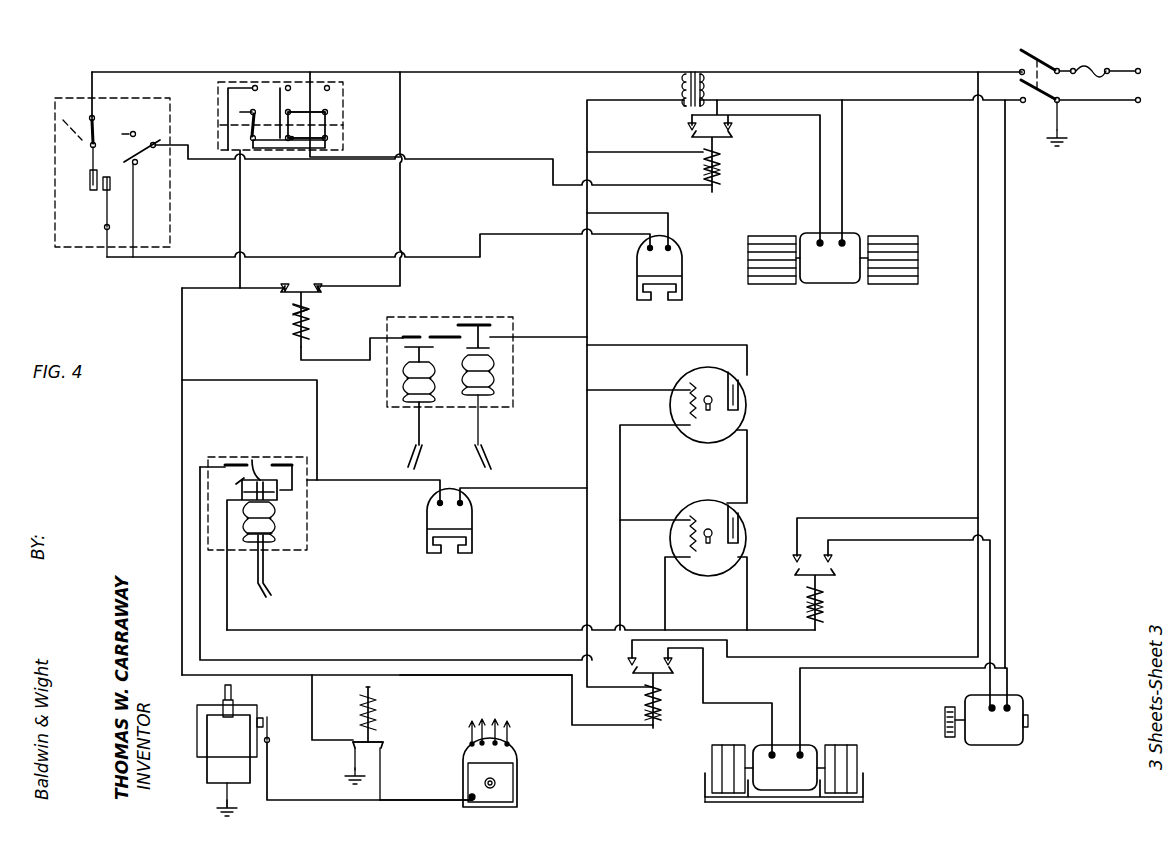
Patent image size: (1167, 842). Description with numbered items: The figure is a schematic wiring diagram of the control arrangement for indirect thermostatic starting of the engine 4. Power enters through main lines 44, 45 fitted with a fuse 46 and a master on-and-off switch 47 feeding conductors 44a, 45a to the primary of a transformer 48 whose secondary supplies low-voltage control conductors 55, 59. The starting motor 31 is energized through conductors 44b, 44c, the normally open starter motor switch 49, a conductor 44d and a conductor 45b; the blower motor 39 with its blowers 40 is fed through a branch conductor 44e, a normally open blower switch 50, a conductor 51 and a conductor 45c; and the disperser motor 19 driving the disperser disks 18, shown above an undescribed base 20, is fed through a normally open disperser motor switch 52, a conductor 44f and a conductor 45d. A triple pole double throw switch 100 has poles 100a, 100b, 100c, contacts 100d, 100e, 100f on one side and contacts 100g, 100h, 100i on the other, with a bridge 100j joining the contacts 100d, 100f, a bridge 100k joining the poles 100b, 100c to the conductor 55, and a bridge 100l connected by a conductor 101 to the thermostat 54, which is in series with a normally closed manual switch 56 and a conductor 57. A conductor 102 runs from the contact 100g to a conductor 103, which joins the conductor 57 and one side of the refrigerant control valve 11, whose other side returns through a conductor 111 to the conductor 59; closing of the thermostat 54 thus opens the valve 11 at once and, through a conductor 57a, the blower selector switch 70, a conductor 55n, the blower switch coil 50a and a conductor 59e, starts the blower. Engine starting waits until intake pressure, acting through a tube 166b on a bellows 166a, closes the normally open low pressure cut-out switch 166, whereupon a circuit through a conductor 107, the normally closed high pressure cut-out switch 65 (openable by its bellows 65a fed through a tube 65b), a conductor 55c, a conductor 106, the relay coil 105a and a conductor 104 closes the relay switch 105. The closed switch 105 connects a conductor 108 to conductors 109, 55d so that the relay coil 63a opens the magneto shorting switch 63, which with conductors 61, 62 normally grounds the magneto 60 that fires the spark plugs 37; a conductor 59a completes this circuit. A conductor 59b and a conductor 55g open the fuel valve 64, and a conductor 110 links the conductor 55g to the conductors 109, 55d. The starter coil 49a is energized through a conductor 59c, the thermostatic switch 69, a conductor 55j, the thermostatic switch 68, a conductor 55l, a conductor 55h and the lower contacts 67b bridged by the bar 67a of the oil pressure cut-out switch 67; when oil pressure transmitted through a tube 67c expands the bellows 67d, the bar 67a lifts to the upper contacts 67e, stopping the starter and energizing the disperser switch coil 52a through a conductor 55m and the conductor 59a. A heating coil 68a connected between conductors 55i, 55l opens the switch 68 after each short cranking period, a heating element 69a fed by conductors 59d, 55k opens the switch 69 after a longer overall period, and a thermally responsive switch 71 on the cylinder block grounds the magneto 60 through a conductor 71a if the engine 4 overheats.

The internal combustion engine 4 is at (192, 722).
The solenoid operated refrigerant control valve 11 is at (674, 260).
The disperser disks 18 is at (712, 770).
The disperser motor 19 is at (808, 748).
The battery tray 20 is at (864, 798).
The starting motor 31 is at (992, 746).
The spark plugs 37 is at (220, 696).
The blower motor 39 is at (850, 234).
The blowers 40 is at (773, 236).
The main line 44 is at (1125, 68).
The conductor 44a is at (867, 70).
The conductor 44b is at (976, 344).
The conductor 44c is at (880, 516).
The conductor 44d is at (943, 540).
The branch conductor 44e is at (712, 86).
The conductor 44f is at (743, 704).
The main line 45 is at (1116, 104).
The conductor 45a is at (912, 101).
The conductor 45b is at (1008, 346).
The conductor 45c is at (844, 151).
The conductor 45d is at (891, 668).
The fuse 46 is at (1088, 68).
The master control switch 47 is at (1053, 50).
The transformer 48 is at (701, 66).
The starter motor switch 49 is at (812, 557).
The relay coil 49a is at (826, 594).
The blower switch 50 is at (687, 132).
The blower switch operating coil 50a is at (722, 160).
The conductor 51 is at (820, 182).
The disperser motor switch 52 is at (692, 664).
The coil 52a is at (664, 724).
The thermostat 54 is at (80, 160).
The conductor 55 is at (535, 72).
The conductor 55c is at (443, 333).
The conductor 55d is at (180, 564).
The conductor 55g is at (350, 480).
The conductor 55h is at (458, 618).
The conductor 55i is at (756, 572).
The conductor 55j is at (750, 440).
The conductor 55k is at (620, 466).
The conductor 55l is at (645, 517).
The conductor 55m is at (270, 662).
The conductor 55n is at (505, 158).
The manually operable control switch 56 is at (88, 112).
The conductor 57 is at (102, 236).
The conductor 57a is at (133, 227).
The conductor 59 is at (584, 102).
The conductor 59a is at (488, 675).
The conductor 59b is at (557, 488).
The conductor 59c is at (696, 344).
The conductor 59d is at (630, 388).
The conductor 59e is at (630, 152).
The engine magneto 60 is at (520, 754).
The conductor 61 is at (415, 798).
The conductor 62 is at (383, 766).
The magneto shorting switch 63 is at (388, 732).
The relay coil 63a is at (372, 686).
The solenoid operated fuel valve 64 is at (468, 522).
The high pressure cut-out switch 65 is at (478, 322).
The bellows 65a is at (498, 376).
The tube 65b is at (490, 446).
The oil pressure cut-out switch 67 is at (228, 438).
The conducting bar 67a is at (235, 478).
The lower contacts 67b is at (237, 491).
The tube 67c is at (278, 588).
The pressure responsive bellows element 67d is at (275, 526).
The upper contacts 67e is at (258, 466).
The thermostatic switch 68 is at (740, 524).
The heating coil 68a is at (690, 543).
The thermostatic switch 69 is at (745, 396).
The heating element 69a is at (683, 384).
The switch 70 is at (150, 162).
The thermally responsive switch 71 is at (275, 734).
The conductor 71a is at (302, 798).
The triple pole double throw switch 100 is at (217, 96).
The switch pole 100a is at (255, 112).
The switch pole 100b is at (293, 138).
The switch pole 100c is at (328, 130).
The switch contact 100d is at (254, 140).
The switch contact 100e is at (288, 140).
The switch contact 100f is at (327, 140).
The switch contact 100g is at (253, 86).
The switch contact 100h is at (296, 88).
The switch contact 100i is at (330, 88).
The bridging conductor 100j is at (310, 140).
The bridging conductor 100k is at (325, 112).
The bridging conductor 100l is at (288, 88).
The conductor 101 is at (135, 72).
The conductor 102 is at (226, 128).
The conductor 103 is at (153, 264).
The conductor 104 is at (237, 272).
The relay switch 105 is at (311, 288).
The relay coil 105a is at (310, 316).
The conductor 106 is at (347, 362).
The conductor 107 is at (560, 336).
The conductor 108 is at (400, 211).
The conductor 109 is at (182, 324).
The conductor 110 is at (260, 380).
The conductor 111 is at (667, 213).
The low pressure cut-out switch 166 is at (413, 330).
The switch bellows 166a is at (407, 400).
The tube 166b is at (408, 462).